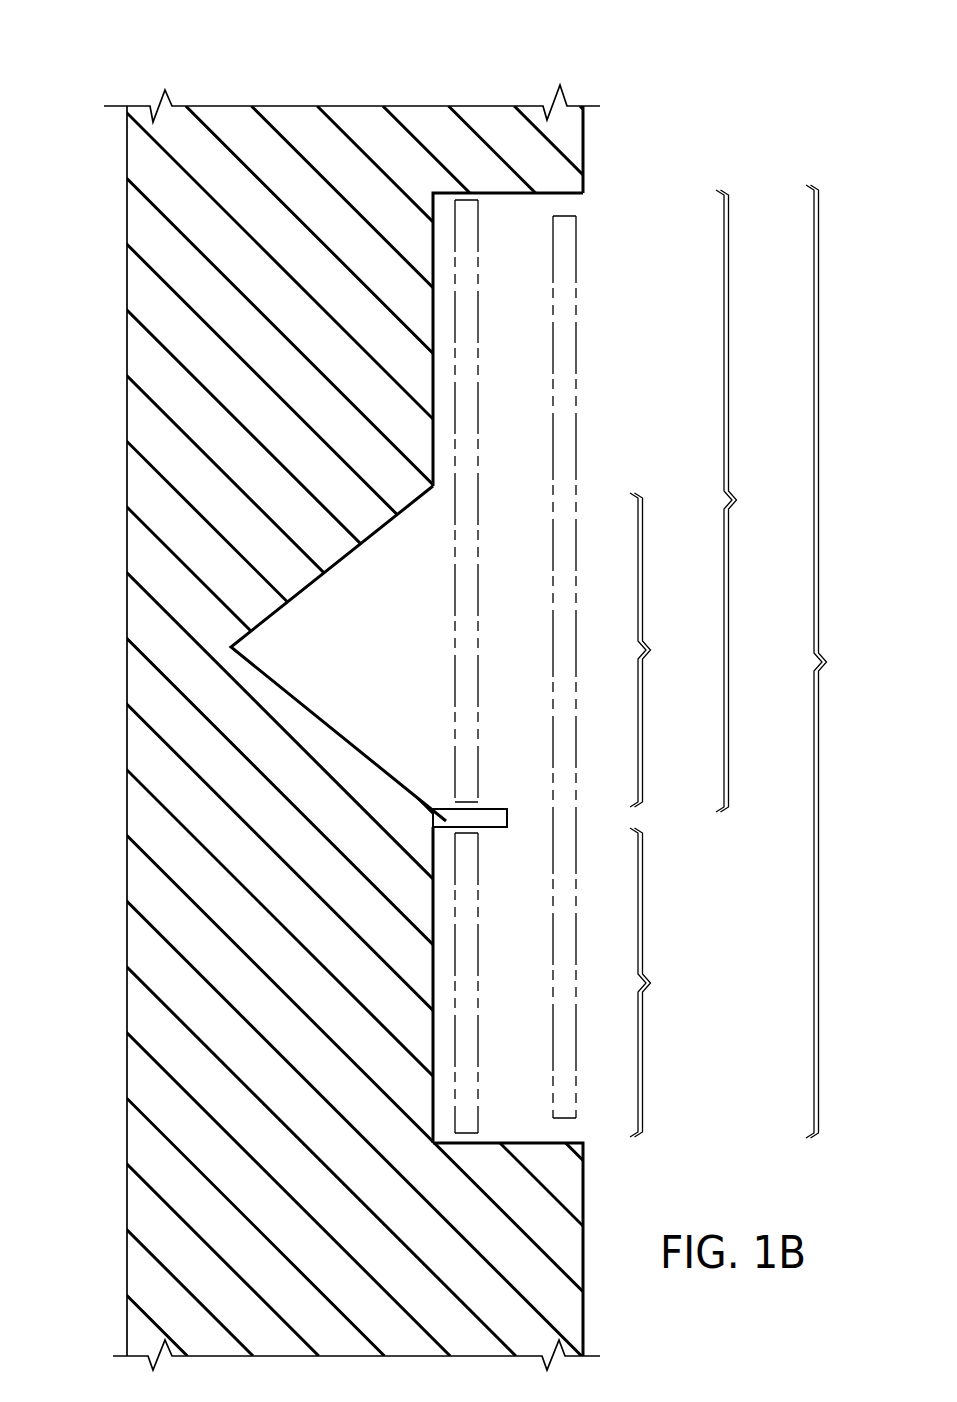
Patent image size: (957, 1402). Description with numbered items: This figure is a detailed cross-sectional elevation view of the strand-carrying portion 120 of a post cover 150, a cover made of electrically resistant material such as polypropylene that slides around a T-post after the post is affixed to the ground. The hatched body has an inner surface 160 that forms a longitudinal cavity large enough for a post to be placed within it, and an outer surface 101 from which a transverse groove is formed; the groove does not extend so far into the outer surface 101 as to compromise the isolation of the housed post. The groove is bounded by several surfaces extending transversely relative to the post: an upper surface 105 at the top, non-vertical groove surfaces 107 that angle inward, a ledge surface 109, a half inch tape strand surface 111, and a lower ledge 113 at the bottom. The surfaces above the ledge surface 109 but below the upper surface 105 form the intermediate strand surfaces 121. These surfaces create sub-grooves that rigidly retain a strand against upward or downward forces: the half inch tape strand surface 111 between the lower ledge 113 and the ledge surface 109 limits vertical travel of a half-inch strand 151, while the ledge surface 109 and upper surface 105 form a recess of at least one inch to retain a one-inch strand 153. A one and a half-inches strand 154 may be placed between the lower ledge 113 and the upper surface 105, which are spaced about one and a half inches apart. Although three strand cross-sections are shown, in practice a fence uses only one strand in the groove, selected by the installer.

The post cover 150 is at (209, 63).
The inner surface 160 is at (127, 687).
The outer surface 101 is at (583, 150).
The upper surface 105 is at (507, 195).
The lower ledge 113 is at (532, 1143).
The ledge surface 109 is at (632, 804).
The one-inch strand 153 is at (478, 510).
The half-inch strand 151 is at (478, 933).
The one and a half-inches strand 154 is at (577, 331).
The non-vertical groove surfaces 107 is at (664, 650).
The half inch tape strand surface 111 is at (664, 982).
The intermediate strand surfaces 121 is at (749, 501).
The strand-carrying portion 120 is at (842, 661).